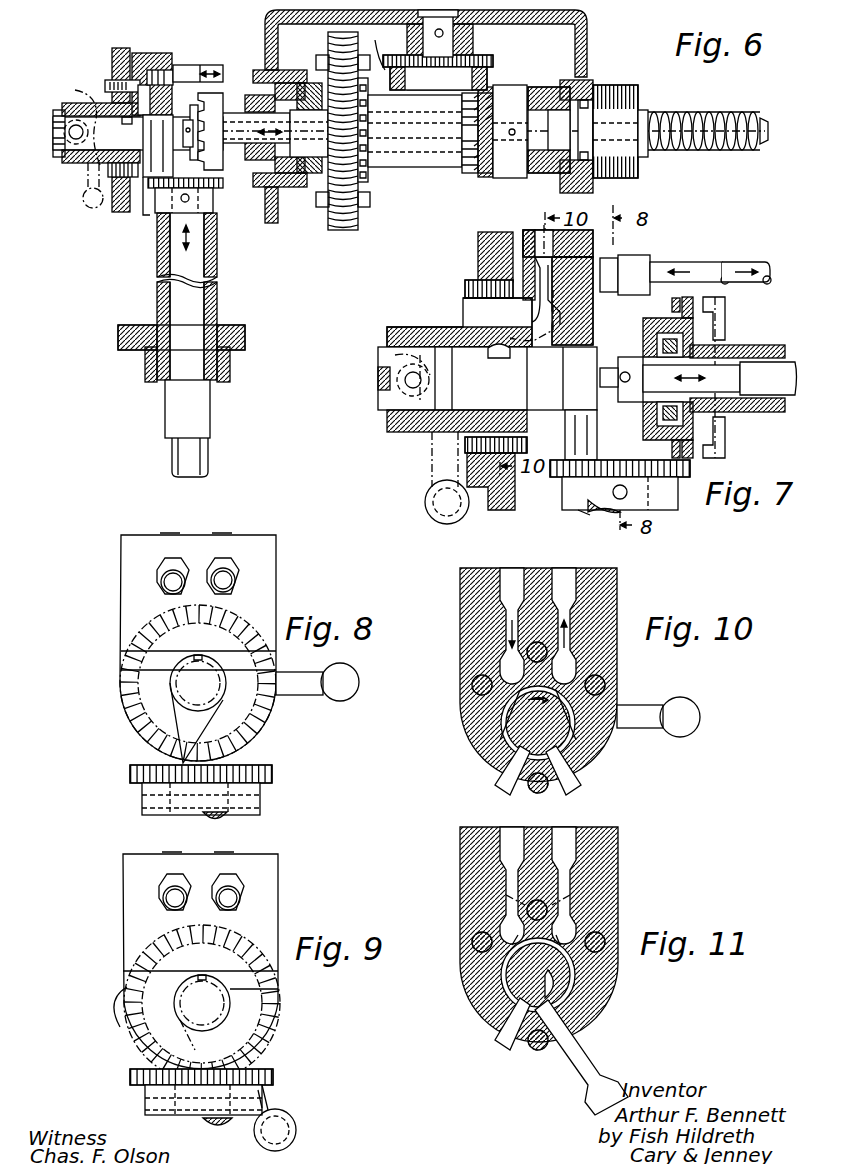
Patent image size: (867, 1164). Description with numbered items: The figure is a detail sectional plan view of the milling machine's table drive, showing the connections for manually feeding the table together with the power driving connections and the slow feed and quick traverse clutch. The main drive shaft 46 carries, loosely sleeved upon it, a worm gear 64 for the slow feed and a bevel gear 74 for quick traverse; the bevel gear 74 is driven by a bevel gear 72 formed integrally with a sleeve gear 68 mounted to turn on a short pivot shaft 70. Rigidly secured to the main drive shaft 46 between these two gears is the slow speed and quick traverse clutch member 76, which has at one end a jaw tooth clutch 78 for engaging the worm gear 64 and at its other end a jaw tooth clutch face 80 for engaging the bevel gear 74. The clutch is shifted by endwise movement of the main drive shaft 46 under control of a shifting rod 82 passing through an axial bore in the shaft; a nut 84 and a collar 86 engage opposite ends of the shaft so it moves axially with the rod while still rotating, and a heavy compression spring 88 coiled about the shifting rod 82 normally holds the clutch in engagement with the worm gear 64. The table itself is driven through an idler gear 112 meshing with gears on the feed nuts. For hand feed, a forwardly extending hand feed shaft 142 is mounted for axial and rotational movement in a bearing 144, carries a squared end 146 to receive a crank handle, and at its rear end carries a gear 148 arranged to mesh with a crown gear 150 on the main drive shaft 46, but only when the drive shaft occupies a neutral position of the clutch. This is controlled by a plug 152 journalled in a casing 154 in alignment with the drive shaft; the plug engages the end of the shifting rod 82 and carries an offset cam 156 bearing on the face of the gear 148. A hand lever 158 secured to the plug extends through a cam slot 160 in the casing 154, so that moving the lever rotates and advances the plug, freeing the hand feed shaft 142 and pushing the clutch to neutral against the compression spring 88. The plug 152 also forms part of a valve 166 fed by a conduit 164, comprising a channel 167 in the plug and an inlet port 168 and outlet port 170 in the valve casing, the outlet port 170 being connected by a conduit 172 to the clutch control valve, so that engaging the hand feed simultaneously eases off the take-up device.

In FIG. 6, the main drive shaft 46 is at (478, 150).
In FIG. 7, the main drive shaft 46 is at (780, 412).
In FIG. 6, the worm gear 64 is at (332, 225).
In FIG. 6, the sleeve gear 68 is at (493, 62).
In FIG. 6, the pivot shaft 70 is at (442, 41).
In FIG. 6, the bevel gear 72 is at (395, 72).
In FIG. 6, the bevel gear 74 is at (495, 178).
In FIG. 6, the slow speed and quick traverse clutch member 76 is at (412, 167).
In FIG. 6, the jaw tooth clutch 78 is at (368, 182).
In FIG. 6, the jaw tooth clutch face 80 is at (468, 160).
In FIG. 6, the shifting rod 82 is at (184, 147).
In FIG. 7, the shifting rod 82 is at (768, 378).
In FIG. 6, the nut 84 is at (193, 116).
In FIG. 7, the nut 84 is at (637, 355).
In FIG. 6, the collar 86 is at (645, 112).
In FIG. 6, the compression spring 88 is at (712, 115).
In FIG. 6, the idler gear 112 is at (628, 90).
In FIG. 6, the hand feed shaft 142 is at (183, 300).
In FIG. 7, the hand feed shaft 142 is at (590, 512).
In FIG. 8, the hand feed shaft 142 is at (230, 818).
In FIG. 9, the hand feed shaft 142 is at (190, 1122).
In FIG. 6, the bearing 144 is at (158, 380).
In FIG. 6, the squared end 146 is at (188, 460).
In FIG. 6, the gear 148 is at (215, 190).
In FIG. 7, the gear 148 is at (660, 465).
In FIG. 8, the gear 148 is at (135, 632).
In FIG. 9, the gear 148 is at (135, 962).
In FIG. 6, the crown gear 150 is at (222, 100).
In FIG. 7, the crown gear 150 is at (730, 312).
In FIG. 8, the crown gear 150 is at (132, 775).
In FIG. 9, the crown gear 150 is at (272, 1072).
In FIG. 6, the plug 152 is at (70, 127).
In FIG. 7, the plug 152 is at (388, 357).
In FIG. 8, the plug 152 is at (170, 700).
In FIG. 9, the plug 152 is at (203, 1017).
In FIG. 10, the plug 152 is at (490, 778).
In FIG. 11, the plug 152 is at (500, 1046).
In FIG. 6, the casing 154 is at (100, 103).
In FIG. 7, the casing 154 is at (440, 327).
In FIG. 6, the offset cam 156 is at (160, 185).
In FIG. 7, the offset cam 156 is at (582, 440).
In FIG. 8, the offset cam 156 is at (150, 755).
In FIG. 9, the offset cam 156 is at (125, 1010).
In FIG. 6, the hand lever 158 is at (83, 193).
In FIG. 7, the hand lever 158 is at (440, 478).
In FIG. 8, the hand lever 158 is at (342, 690).
In FIG. 9, the hand lever 158 is at (278, 1120).
In FIG. 10, the hand lever 158 is at (685, 717).
In FIG. 11, the hand lever 158 is at (585, 1085).
In FIG. 6, the cam slot 160 is at (86, 92).
In FIG. 7, the cam slot 160 is at (440, 372).
In FIG. 6, the conduit 164 is at (205, 72).
In FIG. 7, the conduit 164 is at (708, 262).
In FIG. 8, the conduit 164 is at (170, 580).
In FIG. 9, the conduit 164 is at (172, 896).
In FIG. 6, the valve 166 is at (160, 55).
In FIG. 7, the valve 166 is at (593, 310).
In FIG. 8, the valve 166 is at (130, 590).
In FIG. 9, the valve 166 is at (132, 928).
In FIG. 10, the valve 166 is at (600, 752).
In FIG. 11, the valve 166 is at (605, 848).
In FIG. 6, the channel 167 is at (126, 124).
In FIG. 7, the channel 167 is at (490, 357).
In FIG. 10, the channel 167 is at (520, 706).
In FIG. 11, the channel 167 is at (560, 978).
In FIG. 6, the inlet port 168 is at (143, 115).
In FIG. 7, the inlet port 168 is at (543, 345).
In FIG. 10, the inlet port 168 is at (508, 645).
In FIG. 11, the inlet port 168 is at (512, 888).
In FIG. 10, the outlet port 170 is at (570, 655).
In FIG. 11, the outlet port 170 is at (570, 892).
In FIG. 6, the conduit 172 is at (225, 65).
In FIG. 7, the conduit 172 is at (740, 266).
In FIG. 8, the conduit 172 is at (223, 580).
In FIG. 9, the conduit 172 is at (228, 898).